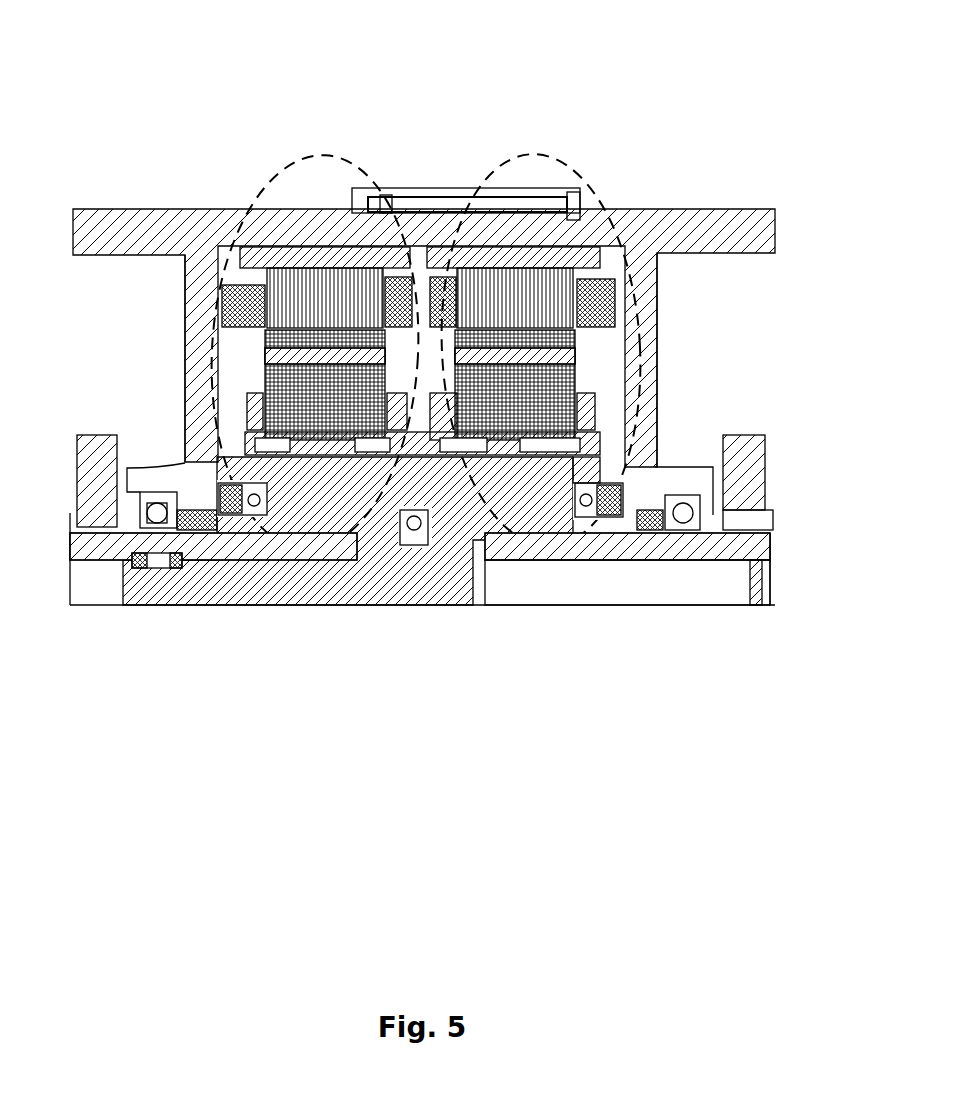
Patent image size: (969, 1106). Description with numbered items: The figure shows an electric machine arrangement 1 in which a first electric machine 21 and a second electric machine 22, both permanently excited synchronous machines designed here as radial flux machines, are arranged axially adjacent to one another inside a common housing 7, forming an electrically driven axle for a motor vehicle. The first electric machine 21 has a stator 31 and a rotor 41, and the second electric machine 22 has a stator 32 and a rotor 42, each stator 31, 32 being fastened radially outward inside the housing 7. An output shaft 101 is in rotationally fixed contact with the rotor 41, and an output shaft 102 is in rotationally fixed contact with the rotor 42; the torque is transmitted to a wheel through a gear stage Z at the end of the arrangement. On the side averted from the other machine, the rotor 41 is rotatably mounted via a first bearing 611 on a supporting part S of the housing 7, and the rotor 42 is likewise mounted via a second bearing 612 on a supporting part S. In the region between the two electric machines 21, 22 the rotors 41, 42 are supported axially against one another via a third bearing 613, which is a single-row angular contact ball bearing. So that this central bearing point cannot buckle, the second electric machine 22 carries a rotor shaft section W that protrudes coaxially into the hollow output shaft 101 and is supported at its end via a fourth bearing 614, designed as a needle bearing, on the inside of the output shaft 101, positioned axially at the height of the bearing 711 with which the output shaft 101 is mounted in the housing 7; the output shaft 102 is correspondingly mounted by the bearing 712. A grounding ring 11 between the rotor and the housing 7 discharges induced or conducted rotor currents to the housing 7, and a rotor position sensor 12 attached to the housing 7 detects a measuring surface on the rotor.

The electric machine arrangement 1 is at (478, 103).
The housing 7 is at (157, 233).
The supporting part S is at (187, 378).
The gear stage Z is at (743, 467).
The rotor shaft section W is at (263, 577).
The grounding ring 11 is at (592, 492).
The rotor position sensor 12 is at (228, 512).
The first electric machine 21 is at (288, 172).
The second electric machine 22 is at (570, 167).
The stator 31 is at (347, 277).
The stator 32 is at (522, 277).
The rotor 41 is at (282, 340).
The rotor 42 is at (563, 343).
The output shaft 101 is at (212, 547).
The output shaft 102 is at (633, 547).
The first bearing 611 is at (237, 480).
The second bearing 612 is at (600, 487).
The third bearing 613 is at (413, 537).
The fourth bearing 614 is at (160, 567).
The bearing 711 is at (155, 492).
The bearing 712 is at (685, 497).